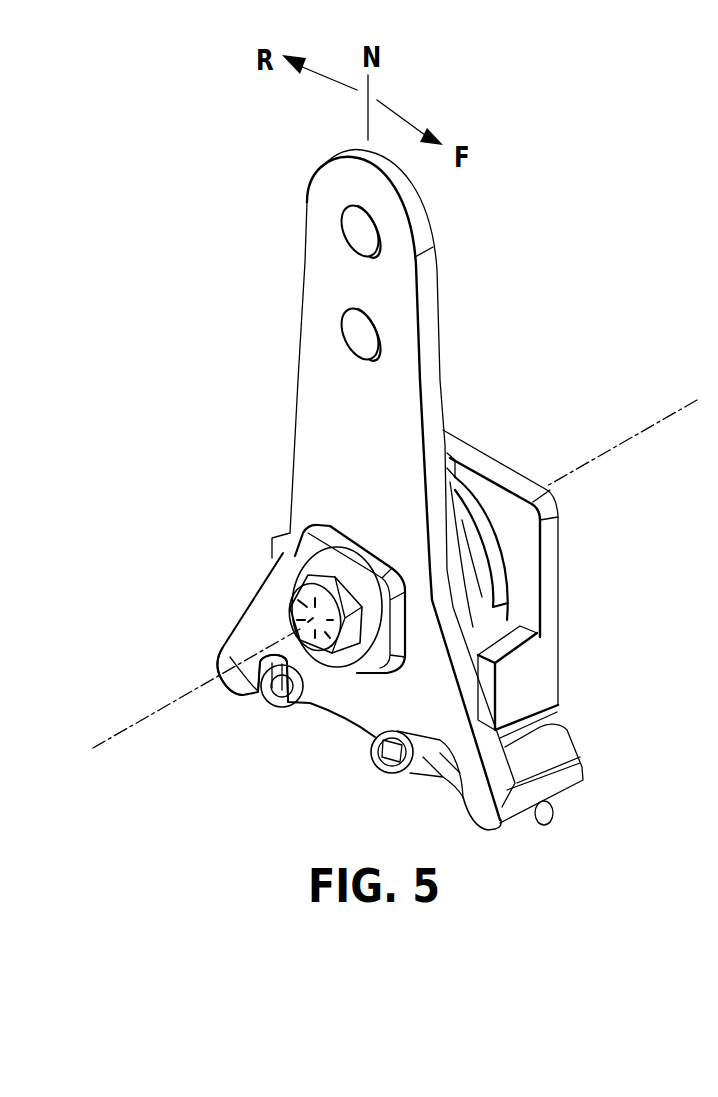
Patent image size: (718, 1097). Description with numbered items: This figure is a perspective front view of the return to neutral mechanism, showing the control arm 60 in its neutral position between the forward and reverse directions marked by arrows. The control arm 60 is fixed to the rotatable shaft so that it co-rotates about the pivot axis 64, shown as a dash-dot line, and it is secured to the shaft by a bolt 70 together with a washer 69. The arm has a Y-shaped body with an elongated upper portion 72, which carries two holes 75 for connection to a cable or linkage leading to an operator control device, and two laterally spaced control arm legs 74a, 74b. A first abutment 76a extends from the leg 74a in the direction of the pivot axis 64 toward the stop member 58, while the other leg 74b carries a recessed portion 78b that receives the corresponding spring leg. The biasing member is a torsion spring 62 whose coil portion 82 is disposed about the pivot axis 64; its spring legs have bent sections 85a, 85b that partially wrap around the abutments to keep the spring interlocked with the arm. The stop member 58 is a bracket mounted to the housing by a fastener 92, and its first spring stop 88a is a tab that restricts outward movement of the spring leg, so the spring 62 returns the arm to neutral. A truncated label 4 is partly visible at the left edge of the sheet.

The partial reference (cut off at sheet edge) 4 is at (6, 658).
The stop member 58 is at (545, 633).
The control arm 60 is at (327, 503).
The spring 62 is at (518, 574).
The pivot axis 64 is at (641, 442).
The washer 69 is at (307, 567).
The bolt 70 is at (297, 600).
The upper portion 72 is at (398, 286).
The control arm leg 74a is at (480, 797).
The control arm leg 74b is at (232, 648).
The holes 75 is at (355, 228).
The first abutment 76a is at (547, 752).
The recessed portion 78b is at (243, 695).
The coil portion 82 is at (473, 547).
The bent section 85a is at (536, 813).
The bent section 85b is at (292, 694).
The first spring stop 88a is at (507, 683).
The fastener 92 is at (395, 770).